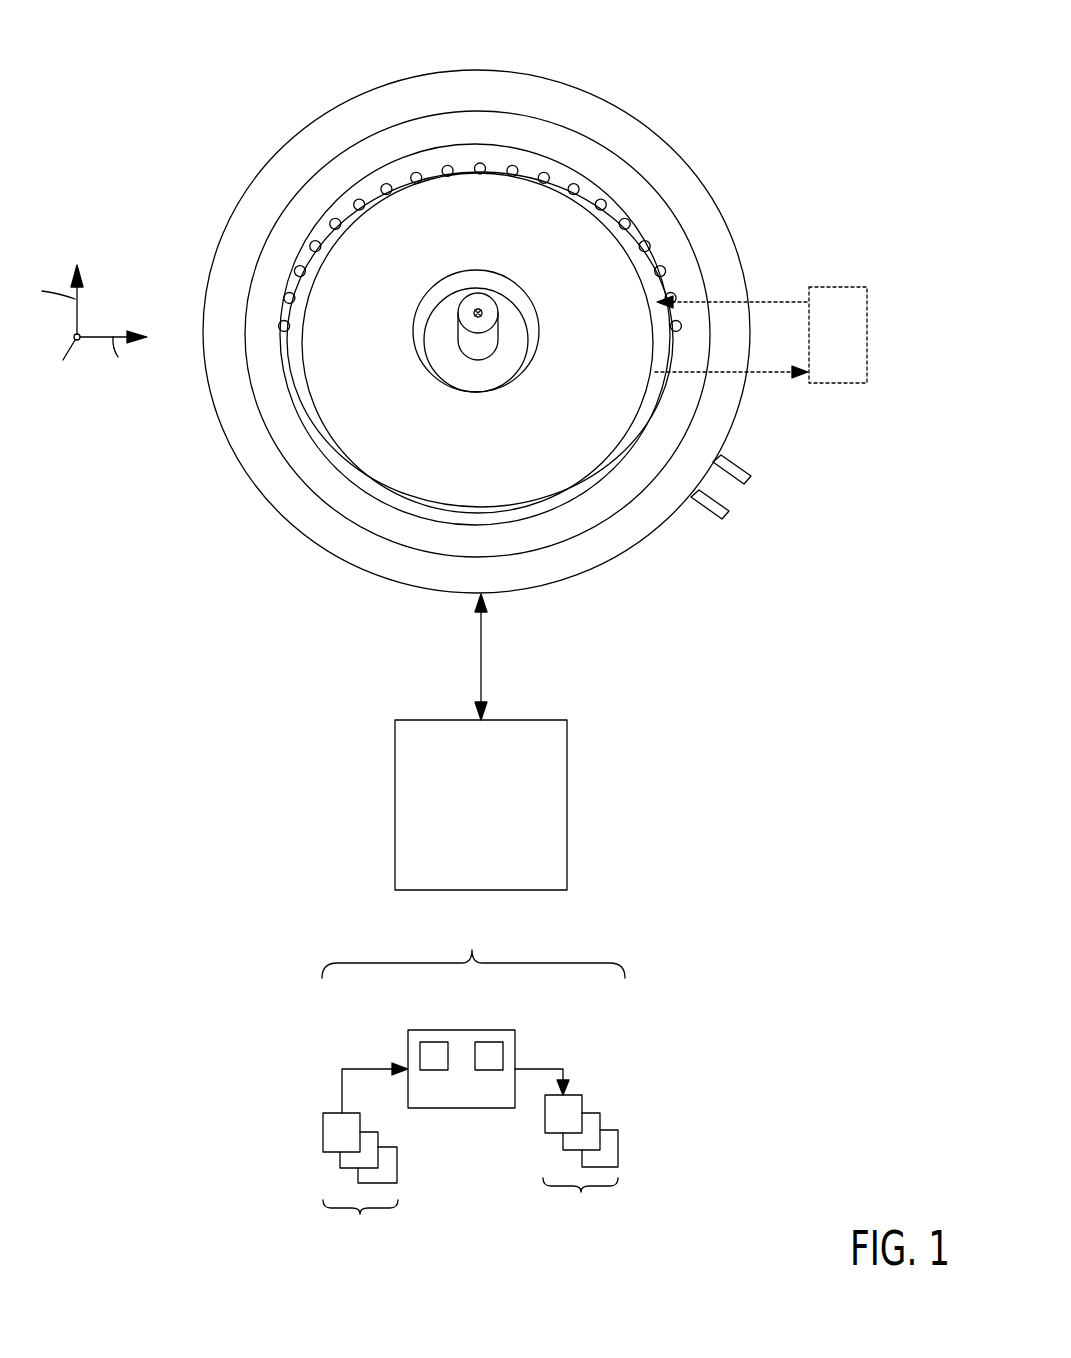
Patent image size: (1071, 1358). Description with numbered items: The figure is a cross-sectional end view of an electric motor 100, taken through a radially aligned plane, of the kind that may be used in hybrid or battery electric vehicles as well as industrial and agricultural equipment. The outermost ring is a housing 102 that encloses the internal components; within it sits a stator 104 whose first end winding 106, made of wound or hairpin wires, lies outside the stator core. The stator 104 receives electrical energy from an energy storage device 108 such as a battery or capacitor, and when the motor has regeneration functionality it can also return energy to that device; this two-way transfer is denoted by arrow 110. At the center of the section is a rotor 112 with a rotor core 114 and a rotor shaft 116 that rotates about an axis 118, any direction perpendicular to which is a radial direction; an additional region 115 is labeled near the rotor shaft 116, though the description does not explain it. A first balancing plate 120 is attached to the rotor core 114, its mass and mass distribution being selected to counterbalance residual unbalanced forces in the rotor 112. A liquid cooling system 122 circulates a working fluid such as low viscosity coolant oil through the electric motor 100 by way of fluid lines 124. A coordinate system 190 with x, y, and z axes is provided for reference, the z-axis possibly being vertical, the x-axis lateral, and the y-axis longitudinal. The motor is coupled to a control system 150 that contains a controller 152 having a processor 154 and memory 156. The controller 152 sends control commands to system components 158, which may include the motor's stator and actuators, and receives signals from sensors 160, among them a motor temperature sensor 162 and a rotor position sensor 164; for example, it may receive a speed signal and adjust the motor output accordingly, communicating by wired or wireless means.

The electric motor 100 is at (204, 35).
The housing 102 is at (705, 210).
The stator 104 is at (722, 263).
The first end winding 106 is at (678, 247).
The energy storage device 108 is at (401, 720).
The arrow 110 is at (505, 663).
The rotor 112 is at (532, 329).
The rotor core 114 is at (495, 378).
The support region 115 is at (531, 365).
The rotor shaft 116 is at (475, 345).
The axis 118 is at (472, 312).
The first balancing plate 120 is at (613, 409).
The liquid cooling system 122 is at (890, 325).
The fluid lines 124 is at (762, 303).
The control system 150 is at (473, 951).
The controller 152 is at (435, 1030).
The processor 154 is at (418, 1055).
The memory 156 is at (505, 1055).
The system components 158 is at (566, 1144).
The sensors 160 is at (365, 1150).
The motor temperature sensor 162 is at (748, 481).
The rotor position sensor 164 is at (726, 516).
The coordinate system 190 is at (118, 296).